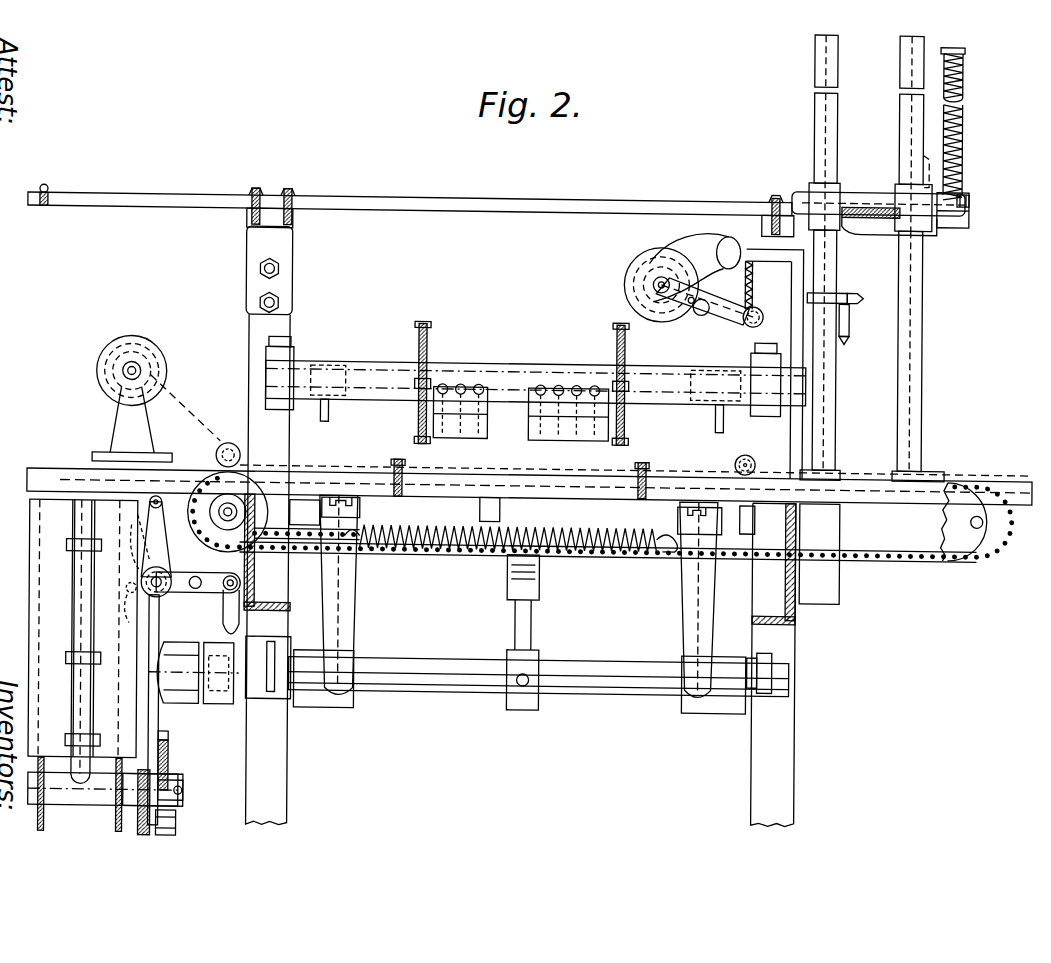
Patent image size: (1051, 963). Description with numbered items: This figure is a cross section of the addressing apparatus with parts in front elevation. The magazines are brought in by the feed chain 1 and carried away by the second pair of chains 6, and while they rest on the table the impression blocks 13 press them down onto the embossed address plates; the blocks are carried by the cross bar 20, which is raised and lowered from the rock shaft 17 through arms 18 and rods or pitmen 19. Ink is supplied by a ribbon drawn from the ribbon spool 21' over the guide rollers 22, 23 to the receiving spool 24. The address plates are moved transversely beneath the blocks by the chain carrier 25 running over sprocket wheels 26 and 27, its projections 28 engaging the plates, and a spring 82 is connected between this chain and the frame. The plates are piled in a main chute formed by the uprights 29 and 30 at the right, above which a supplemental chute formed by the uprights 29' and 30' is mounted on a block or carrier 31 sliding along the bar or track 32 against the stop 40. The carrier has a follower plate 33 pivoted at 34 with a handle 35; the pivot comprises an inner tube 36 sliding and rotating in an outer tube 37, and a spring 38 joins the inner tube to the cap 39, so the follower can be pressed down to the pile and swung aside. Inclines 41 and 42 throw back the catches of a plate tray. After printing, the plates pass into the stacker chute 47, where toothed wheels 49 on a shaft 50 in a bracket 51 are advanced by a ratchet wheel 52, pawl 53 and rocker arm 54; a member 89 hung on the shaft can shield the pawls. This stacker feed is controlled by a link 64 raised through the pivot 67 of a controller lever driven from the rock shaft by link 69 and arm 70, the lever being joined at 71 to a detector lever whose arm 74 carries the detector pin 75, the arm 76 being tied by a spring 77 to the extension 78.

The feed chain 1 is at (392, 467).
The second pair of chains 6 is at (416, 326).
The impression block 13 is at (478, 440).
The rock shaft 17 is at (422, 672).
The arms 18 is at (322, 710).
The rods or pitmen 19 is at (283, 590).
The cross bar 20 is at (517, 364).
The ribbon spool 21' is at (713, 350).
The guide roller 22 is at (745, 455).
The guide roller 23 is at (228, 449).
The receiving spool 24 is at (158, 374).
The chain carrier 25 is at (905, 558).
The sprocket wheel 26 is at (958, 520).
The sprocket wheel 27 is at (231, 496).
The projections 28 is at (922, 559).
The upright 29 is at (925, 356).
The upright 29' is at (952, 62).
The upright 30 is at (833, 355).
The upright 30' is at (808, 61).
The block or carrier 31 is at (880, 194).
The bar or track 32 is at (632, 199).
The follower plate 33 is at (876, 212).
The pivot 34 is at (958, 222).
The handle 35 is at (966, 203).
The inner tube 36 is at (960, 160).
The outer tube 37 is at (960, 134).
The spring 38 is at (960, 110).
The cap 39 is at (962, 47).
The stop 40 is at (45, 196).
The incline 41 is at (818, 158).
The incline 42 is at (912, 156).
The stacker chute 47 is at (62, 515).
The toothed wheels 49 is at (45, 770).
The shaft 50 is at (186, 792).
The bracket 51 is at (62, 811).
The ratchet wheel 52 is at (170, 774).
The pawl 53 is at (170, 746).
The rocker arm 54 is at (139, 808).
The link 64 is at (158, 684).
The pivot 67 is at (150, 587).
The link 69 is at (226, 608).
The arm 70 is at (222, 703).
The pivot connection 71 is at (196, 594).
The arm 74 is at (163, 548).
The pin 75 is at (146, 503).
The arm 76 is at (146, 537).
The spring 77 is at (128, 595).
The extension 78 is at (113, 612).
The spring 82 is at (458, 553).
The member 89 is at (178, 831).